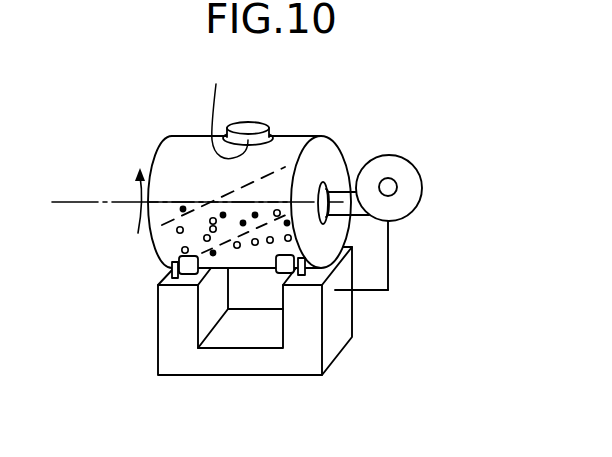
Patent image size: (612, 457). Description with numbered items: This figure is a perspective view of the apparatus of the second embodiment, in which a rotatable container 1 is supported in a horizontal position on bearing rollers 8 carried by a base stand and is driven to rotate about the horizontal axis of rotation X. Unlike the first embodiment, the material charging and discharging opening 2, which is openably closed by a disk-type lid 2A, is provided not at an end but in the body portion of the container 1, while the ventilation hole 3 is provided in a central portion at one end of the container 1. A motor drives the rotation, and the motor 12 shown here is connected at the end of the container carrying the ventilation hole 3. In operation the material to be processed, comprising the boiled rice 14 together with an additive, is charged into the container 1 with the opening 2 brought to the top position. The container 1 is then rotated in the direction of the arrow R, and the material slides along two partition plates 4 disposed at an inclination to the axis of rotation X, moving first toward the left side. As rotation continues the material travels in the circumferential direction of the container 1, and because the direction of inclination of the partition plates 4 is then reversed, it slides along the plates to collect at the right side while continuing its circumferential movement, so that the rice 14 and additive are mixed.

The rotatable container 1 is at (305, 135).
The material charging and discharging opening 2 is at (227, 108).
The disk-type lid 2A is at (262, 122).
The ventilation hole 3 is at (347, 233).
The partition plates 4 is at (210, 199).
The bearing rollers 8 is at (171, 272).
The motor 12 is at (422, 183).
The boiled rice 14 is at (165, 236).
The arrow R is at (131, 191).
The horizontal axis of rotation X is at (53, 207).